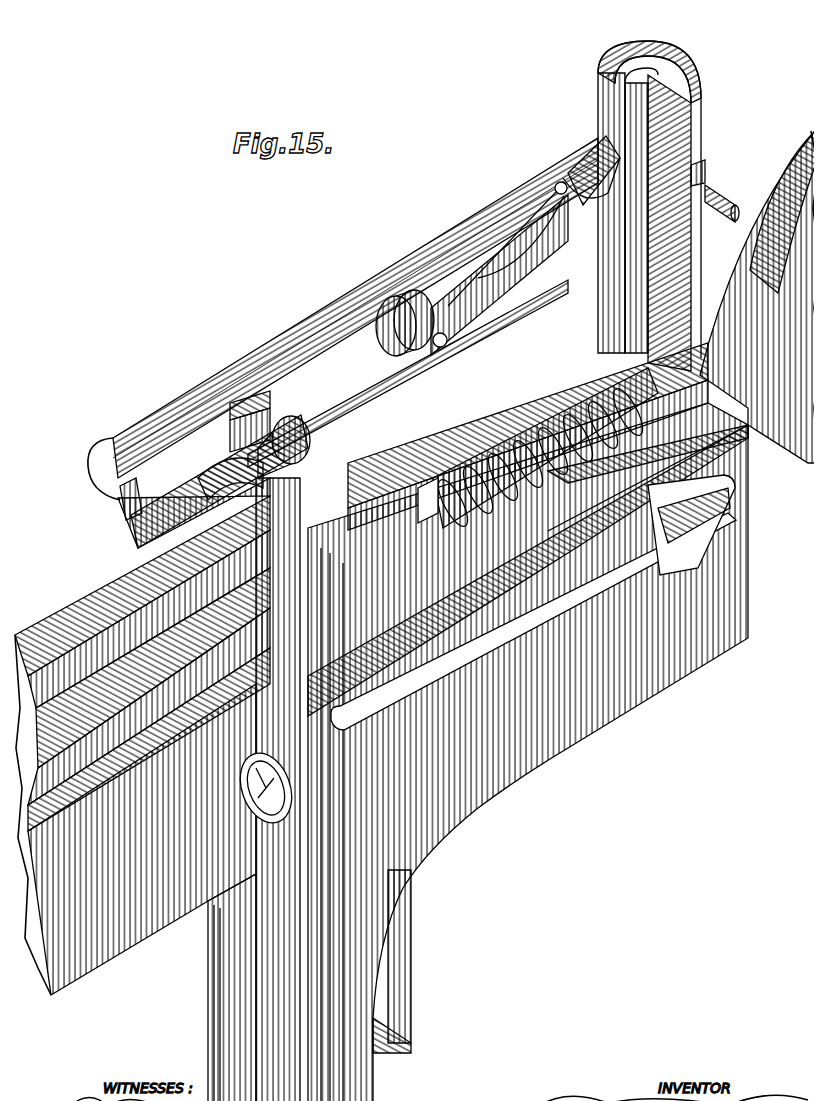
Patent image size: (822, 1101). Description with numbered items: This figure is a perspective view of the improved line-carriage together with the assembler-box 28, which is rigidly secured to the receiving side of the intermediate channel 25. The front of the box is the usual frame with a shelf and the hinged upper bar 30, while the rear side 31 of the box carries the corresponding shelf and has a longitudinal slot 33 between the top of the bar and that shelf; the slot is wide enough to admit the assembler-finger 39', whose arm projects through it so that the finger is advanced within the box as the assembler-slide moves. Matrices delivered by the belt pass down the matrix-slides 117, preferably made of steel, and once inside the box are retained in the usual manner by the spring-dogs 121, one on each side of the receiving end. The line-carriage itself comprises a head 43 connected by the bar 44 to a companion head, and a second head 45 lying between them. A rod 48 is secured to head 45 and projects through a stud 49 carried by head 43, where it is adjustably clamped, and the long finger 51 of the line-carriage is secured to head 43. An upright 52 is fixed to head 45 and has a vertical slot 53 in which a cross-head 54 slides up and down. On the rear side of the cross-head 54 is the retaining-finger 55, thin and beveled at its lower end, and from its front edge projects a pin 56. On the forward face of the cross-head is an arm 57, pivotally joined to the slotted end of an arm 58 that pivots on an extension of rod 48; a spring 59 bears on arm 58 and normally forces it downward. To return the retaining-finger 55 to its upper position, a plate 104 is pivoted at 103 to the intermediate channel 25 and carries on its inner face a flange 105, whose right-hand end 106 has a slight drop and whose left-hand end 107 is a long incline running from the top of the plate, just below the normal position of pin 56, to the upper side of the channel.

The intermediate channel 25 is at (92, 800).
The assembler-box 28 is at (512, 735).
The hinged upper bar 30 is at (645, 474).
The rear side of box 31 is at (442, 422).
The longitudinal slot 33 is at (404, 470).
The assembler-finger 39' is at (546, 621).
The head 43 is at (217, 386).
The bar 44 is at (328, 318).
The head 45 is at (484, 265).
The rod 48 is at (359, 401).
The stud 49 is at (282, 405).
The long finger 51 is at (560, 618).
The upright 52 is at (601, 72).
The vertical slot 53 is at (700, 165).
The cross-head 54 is at (645, 70).
The retaining-finger 55 is at (690, 115).
The pin 56 is at (712, 192).
The arm 57 is at (585, 146).
The arm 58 is at (549, 178).
The spring 59 is at (410, 286).
The pivot 103 is at (196, 884).
The plate 104 is at (150, 810).
The flange 105 is at (118, 503).
The right-hand end of flange 106 is at (212, 430).
The left-hand end of flange 107 is at (46, 604).
The matrix-slides 117 is at (762, 180).
The spring-dogs 121 is at (722, 424).